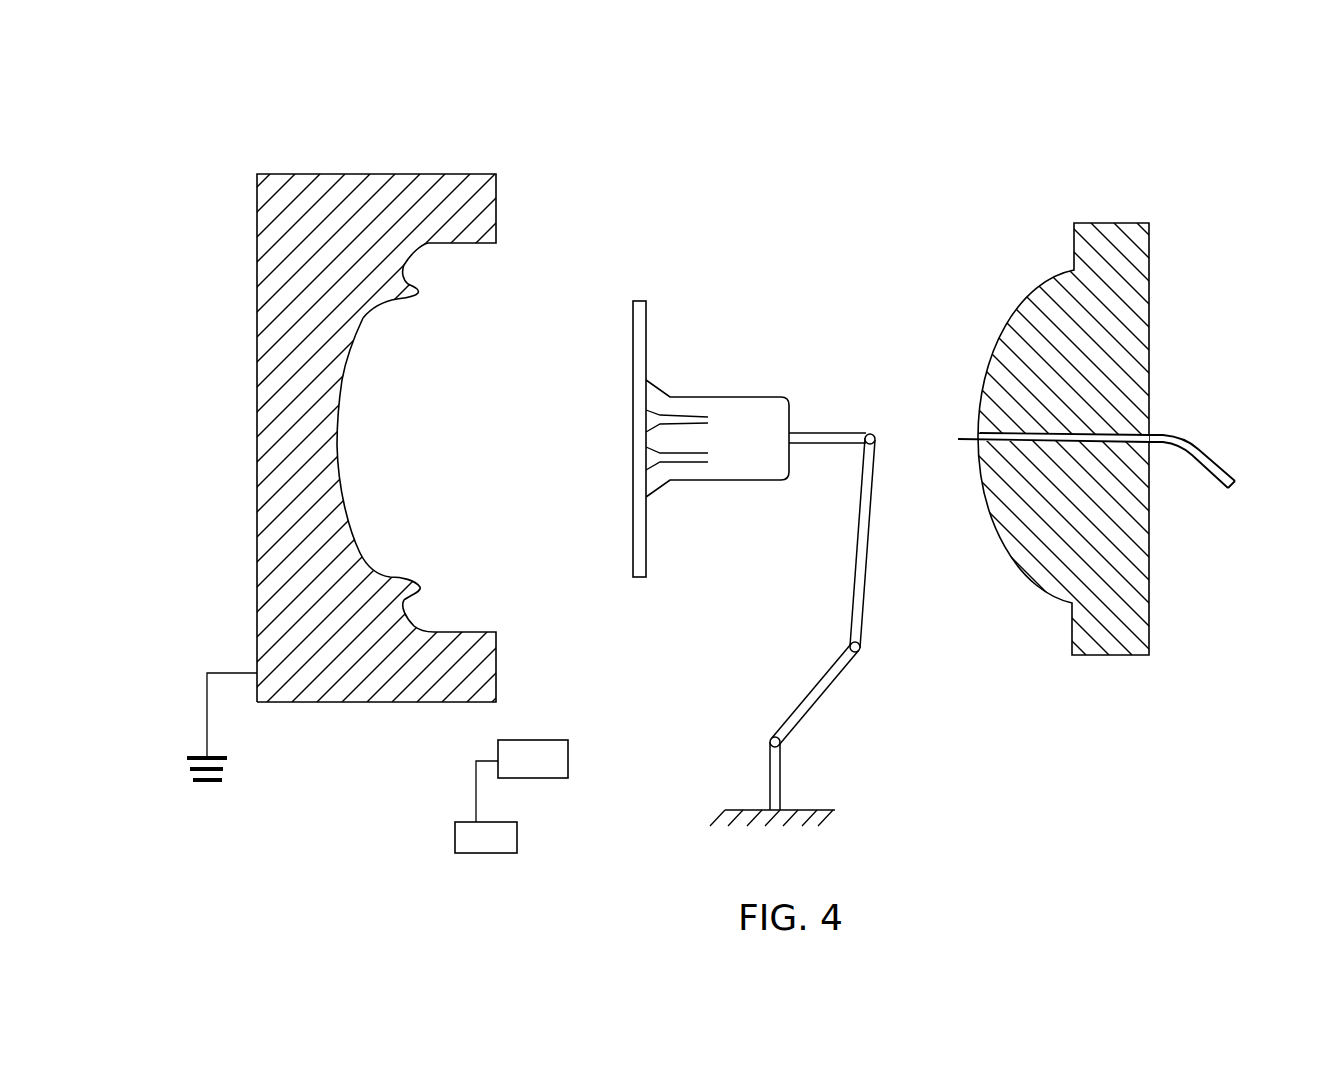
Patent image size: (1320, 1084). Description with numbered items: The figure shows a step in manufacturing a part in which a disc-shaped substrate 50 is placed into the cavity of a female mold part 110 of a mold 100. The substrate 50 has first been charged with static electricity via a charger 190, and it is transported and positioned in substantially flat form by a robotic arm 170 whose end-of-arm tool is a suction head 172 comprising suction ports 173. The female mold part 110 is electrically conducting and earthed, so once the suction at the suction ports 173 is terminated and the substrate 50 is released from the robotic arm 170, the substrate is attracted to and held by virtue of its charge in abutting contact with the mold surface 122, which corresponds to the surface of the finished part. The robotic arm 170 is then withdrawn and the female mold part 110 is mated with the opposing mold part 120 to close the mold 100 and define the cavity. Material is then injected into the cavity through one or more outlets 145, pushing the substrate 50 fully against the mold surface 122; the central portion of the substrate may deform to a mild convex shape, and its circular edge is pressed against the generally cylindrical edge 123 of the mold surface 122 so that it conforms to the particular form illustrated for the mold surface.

The mold 100 is at (792, 173).
The female mold part 110 is at (445, 182).
The mold part 120 is at (1122, 237).
The mold surface 122 is at (340, 433).
The cylindrical edge 123 is at (410, 300).
The outlets 145 is at (978, 439).
The substrate 50 is at (647, 322).
The robotic arm 170 is at (855, 676).
The plasma head housing 172 is at (755, 417).
The suction ports 173 is at (655, 408).
The charger 190 is at (556, 772).